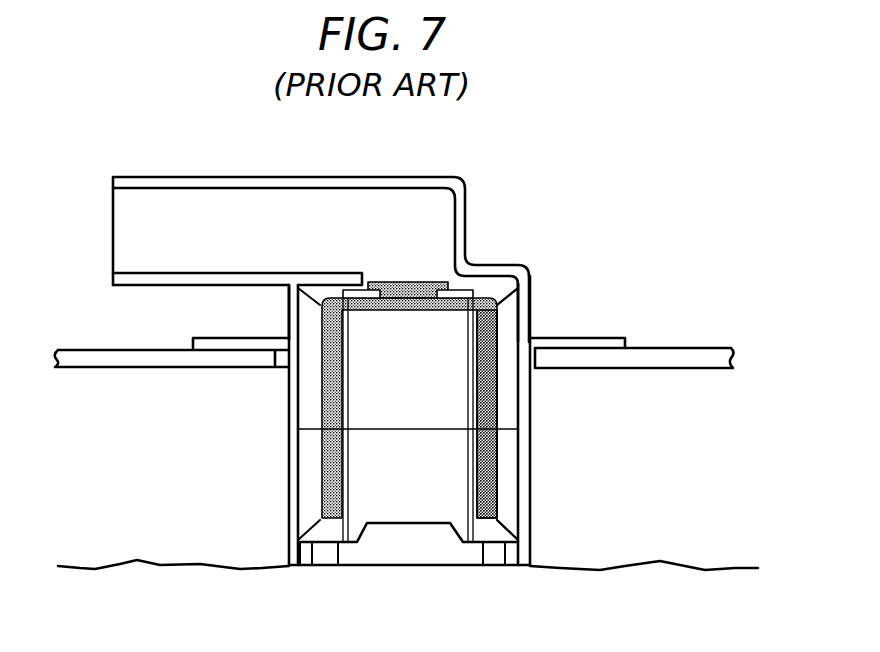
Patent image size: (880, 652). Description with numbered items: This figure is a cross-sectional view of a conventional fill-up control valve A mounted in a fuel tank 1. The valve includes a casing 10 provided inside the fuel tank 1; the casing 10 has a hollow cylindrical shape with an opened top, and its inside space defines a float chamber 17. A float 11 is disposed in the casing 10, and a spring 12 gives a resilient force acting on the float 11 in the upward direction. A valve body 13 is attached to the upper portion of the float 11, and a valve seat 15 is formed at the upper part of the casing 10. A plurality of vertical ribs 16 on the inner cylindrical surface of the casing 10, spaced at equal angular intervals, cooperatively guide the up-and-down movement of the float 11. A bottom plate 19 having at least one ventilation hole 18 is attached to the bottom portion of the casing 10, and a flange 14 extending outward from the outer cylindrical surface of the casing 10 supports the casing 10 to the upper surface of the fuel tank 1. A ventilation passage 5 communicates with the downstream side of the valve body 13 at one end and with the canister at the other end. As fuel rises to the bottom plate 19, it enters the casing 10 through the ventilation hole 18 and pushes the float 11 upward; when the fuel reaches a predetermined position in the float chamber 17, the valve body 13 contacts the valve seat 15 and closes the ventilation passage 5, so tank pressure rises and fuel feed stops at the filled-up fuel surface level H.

The fuel tank 1 is at (703, 370).
The ventilation passage 5 is at (190, 177).
The casing 10 is at (275, 457).
The float 11 is at (497, 452).
The spring 12 is at (475, 493).
The valve body 13 is at (477, 289).
The flange 14 is at (600, 338).
The valve seat 15 is at (445, 283).
The vertical ribs 16 is at (507, 400).
The float chamber 17 is at (373, 383).
The ventilation hole 18 is at (498, 560).
The bottom plate 19 is at (397, 552).
The fill-up control valve A is at (558, 265).
The filled-up fuel surface level H is at (707, 570).